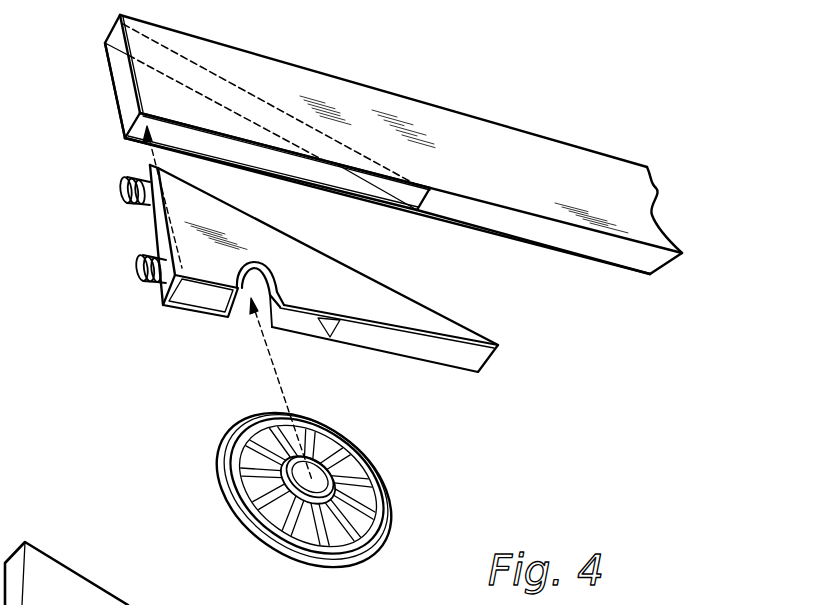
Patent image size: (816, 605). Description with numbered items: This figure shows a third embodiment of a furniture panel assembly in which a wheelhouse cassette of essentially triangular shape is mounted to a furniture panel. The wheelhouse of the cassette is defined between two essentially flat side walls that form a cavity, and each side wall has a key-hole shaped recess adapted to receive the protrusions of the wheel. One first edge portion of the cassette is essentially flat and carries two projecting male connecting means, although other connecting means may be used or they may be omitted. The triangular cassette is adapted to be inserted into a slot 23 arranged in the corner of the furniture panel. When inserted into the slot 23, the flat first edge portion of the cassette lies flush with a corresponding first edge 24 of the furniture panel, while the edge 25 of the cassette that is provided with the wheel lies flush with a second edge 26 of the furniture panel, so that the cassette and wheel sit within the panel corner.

The first edge 24 is at (116, 80).
The slot 23 is at (337, 180).
The second edge 26 is at (595, 243).
The edge 25 is at (452, 350).